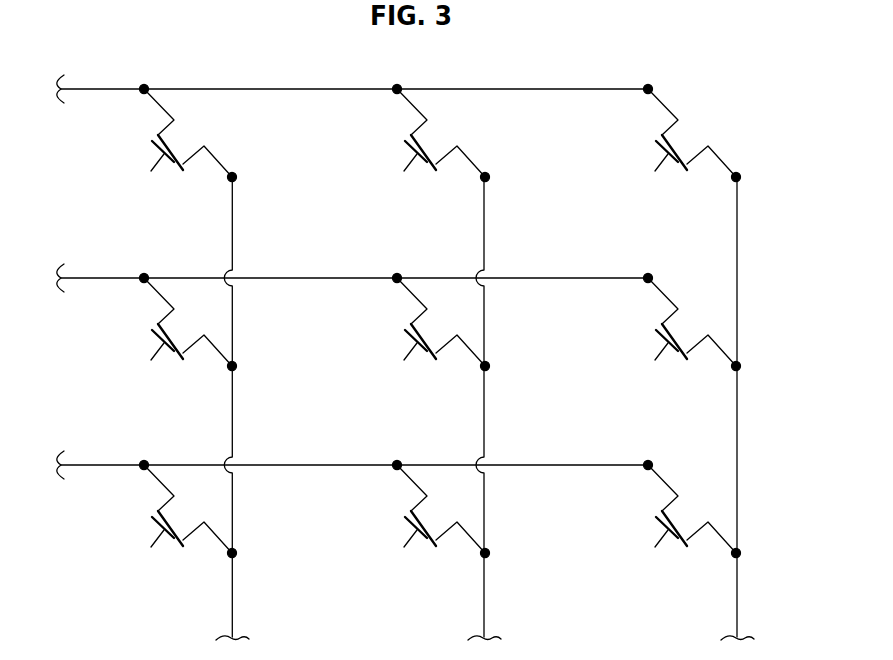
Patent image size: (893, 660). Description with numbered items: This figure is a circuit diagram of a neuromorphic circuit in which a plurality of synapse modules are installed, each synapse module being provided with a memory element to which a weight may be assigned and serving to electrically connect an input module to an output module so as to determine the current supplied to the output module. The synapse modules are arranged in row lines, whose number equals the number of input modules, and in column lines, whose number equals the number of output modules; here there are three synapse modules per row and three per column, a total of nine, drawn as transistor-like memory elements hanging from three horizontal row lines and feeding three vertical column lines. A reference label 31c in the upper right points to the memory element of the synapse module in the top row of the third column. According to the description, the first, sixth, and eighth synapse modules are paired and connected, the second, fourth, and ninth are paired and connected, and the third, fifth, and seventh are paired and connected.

The transistor 31c is at (663, 142).